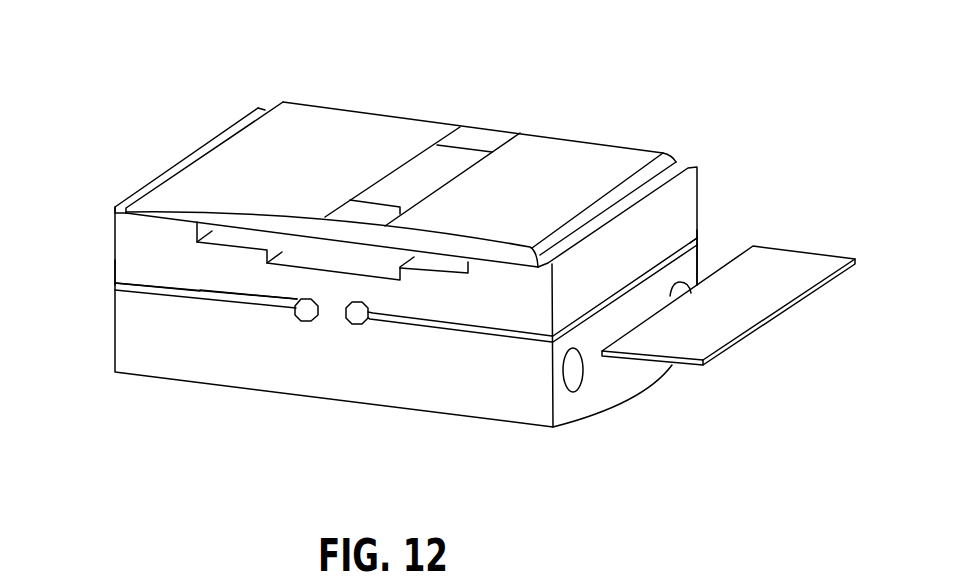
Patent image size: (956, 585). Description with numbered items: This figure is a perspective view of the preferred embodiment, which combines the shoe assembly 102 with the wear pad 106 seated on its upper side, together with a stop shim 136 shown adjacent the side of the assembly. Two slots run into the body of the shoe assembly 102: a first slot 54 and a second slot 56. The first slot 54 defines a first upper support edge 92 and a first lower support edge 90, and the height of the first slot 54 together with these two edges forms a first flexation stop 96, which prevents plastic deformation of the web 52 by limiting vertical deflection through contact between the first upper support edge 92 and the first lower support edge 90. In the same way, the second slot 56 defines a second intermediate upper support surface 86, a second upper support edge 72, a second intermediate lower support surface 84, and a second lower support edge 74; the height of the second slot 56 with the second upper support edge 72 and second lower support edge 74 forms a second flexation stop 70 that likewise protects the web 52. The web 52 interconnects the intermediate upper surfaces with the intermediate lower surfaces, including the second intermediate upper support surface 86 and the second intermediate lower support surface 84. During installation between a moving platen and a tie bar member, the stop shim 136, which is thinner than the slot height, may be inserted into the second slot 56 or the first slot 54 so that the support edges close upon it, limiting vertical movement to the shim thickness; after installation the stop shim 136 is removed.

The wear pad 106 is at (448, 107).
The shoe assembly 102 is at (157, 400).
The first lower support edge 90 is at (110, 288).
The first flexation stop 96 is at (113, 285).
The first upper support edge 92 is at (113, 278).
The first slot 54 is at (217, 297).
The web 52 is at (330, 312).
The second intermediate upper support surface 86 is at (408, 318).
The second intermediate lower support surface 84 is at (457, 333).
The second slot 56 is at (483, 332).
The second upper support edge 72 is at (703, 238).
The second flexation stop 70 is at (703, 240).
The second lower support edge 74 is at (697, 242).
The stop shim 136 is at (783, 312).